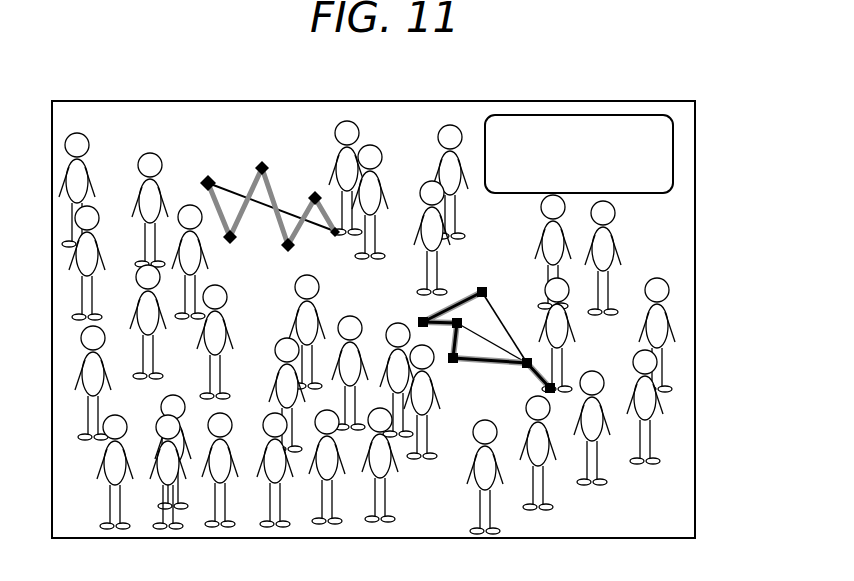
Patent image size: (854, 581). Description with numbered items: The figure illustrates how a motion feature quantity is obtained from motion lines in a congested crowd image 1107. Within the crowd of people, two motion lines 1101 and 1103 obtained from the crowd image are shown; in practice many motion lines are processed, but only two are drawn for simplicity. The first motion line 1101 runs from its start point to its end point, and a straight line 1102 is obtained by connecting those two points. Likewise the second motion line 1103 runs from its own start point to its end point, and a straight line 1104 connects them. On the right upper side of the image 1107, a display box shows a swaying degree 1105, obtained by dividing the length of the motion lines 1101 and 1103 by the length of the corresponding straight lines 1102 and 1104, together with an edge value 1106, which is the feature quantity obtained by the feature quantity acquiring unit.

The motion line 1101 is at (486, 354).
The straight line 1102 is at (509, 322).
The motion line 1103 is at (260, 168).
The straight line 1104 is at (258, 220).
The swaying degree 1105 is at (657, 177).
The edge value 1106 is at (660, 140).
The image 1107 is at (435, 100).